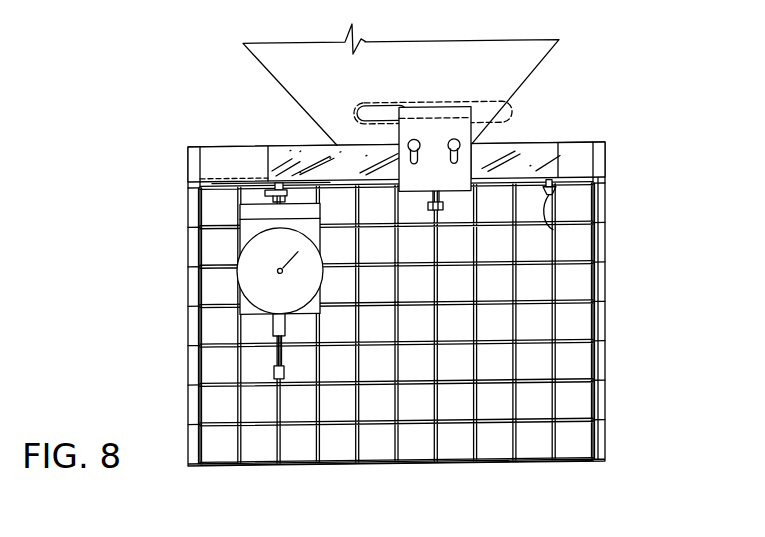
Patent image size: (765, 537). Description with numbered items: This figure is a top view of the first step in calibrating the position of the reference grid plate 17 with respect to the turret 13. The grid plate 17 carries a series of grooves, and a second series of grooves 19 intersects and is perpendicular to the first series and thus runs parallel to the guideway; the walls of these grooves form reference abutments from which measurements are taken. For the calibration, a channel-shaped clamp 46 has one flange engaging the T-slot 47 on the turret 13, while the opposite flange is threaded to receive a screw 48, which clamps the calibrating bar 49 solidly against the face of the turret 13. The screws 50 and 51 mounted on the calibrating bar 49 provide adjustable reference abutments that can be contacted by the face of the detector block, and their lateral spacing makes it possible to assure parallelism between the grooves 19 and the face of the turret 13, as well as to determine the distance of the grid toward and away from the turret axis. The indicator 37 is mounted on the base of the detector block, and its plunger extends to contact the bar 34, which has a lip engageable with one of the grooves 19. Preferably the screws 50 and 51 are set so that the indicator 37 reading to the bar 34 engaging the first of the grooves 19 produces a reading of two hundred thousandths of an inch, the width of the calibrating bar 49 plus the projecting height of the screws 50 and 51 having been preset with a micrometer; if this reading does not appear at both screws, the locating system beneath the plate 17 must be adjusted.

The turret 13 is at (537, 73).
The reference grid plate 17 is at (188, 326).
The second series of grooves 19 is at (603, 373).
The bar 34 is at (248, 149).
The indicator 37 is at (292, 304).
The channel-shaped clamp 46 is at (471, 138).
The T-slot 47 is at (496, 106).
The screw 48 is at (444, 209).
The calibrating bar 49 is at (521, 172).
The screw 50 is at (262, 202).
The screw 51 is at (553, 232).